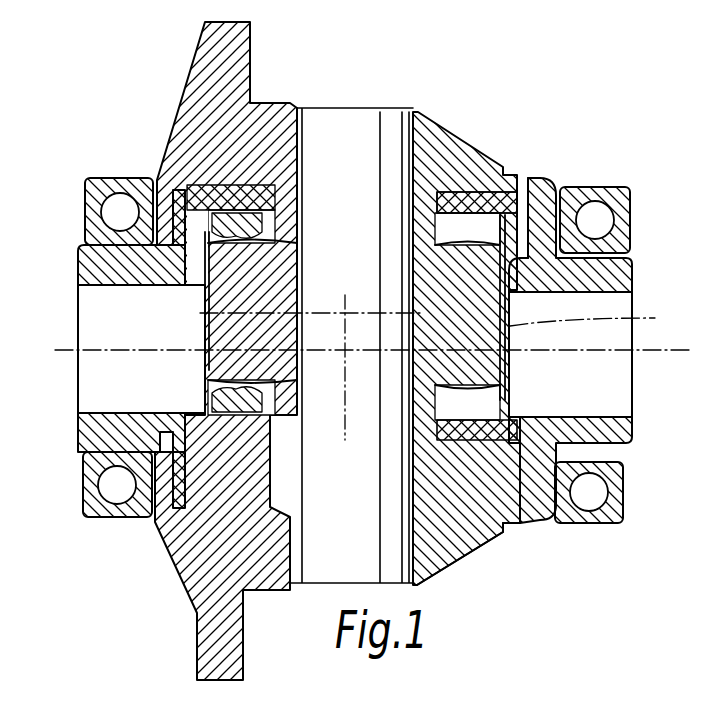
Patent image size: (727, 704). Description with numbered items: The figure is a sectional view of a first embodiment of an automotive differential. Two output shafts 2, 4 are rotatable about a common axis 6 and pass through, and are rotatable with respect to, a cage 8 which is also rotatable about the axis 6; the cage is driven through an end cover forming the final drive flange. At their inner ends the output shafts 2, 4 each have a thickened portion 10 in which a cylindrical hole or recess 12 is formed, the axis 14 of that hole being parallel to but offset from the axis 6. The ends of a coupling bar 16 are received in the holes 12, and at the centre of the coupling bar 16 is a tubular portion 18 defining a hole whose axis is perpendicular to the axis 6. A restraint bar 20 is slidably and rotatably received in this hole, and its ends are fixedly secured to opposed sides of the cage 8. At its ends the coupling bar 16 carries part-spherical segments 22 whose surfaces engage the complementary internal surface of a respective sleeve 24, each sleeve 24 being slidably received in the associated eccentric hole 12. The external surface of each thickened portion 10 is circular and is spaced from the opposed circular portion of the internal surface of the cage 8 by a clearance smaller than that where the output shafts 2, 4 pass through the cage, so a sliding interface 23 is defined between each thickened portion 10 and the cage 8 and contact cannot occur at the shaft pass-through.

The output shaft 2 is at (628, 283).
The output shaft 4 is at (84, 276).
The axis 6 is at (668, 348).
The cage 8 is at (422, 230).
The thickened portion 10 is at (497, 487).
The cylindrical hole 12 is at (300, 215).
The axis of the hole 14 is at (439, 318).
The coupling bar 16 is at (478, 205).
The tubular portion 18 is at (477, 202).
The restraint bar 20 is at (370, 135).
The part-spherical segment 22 is at (509, 405).
The sliding interface 23 is at (472, 518).
The sleeve 24 is at (533, 182).